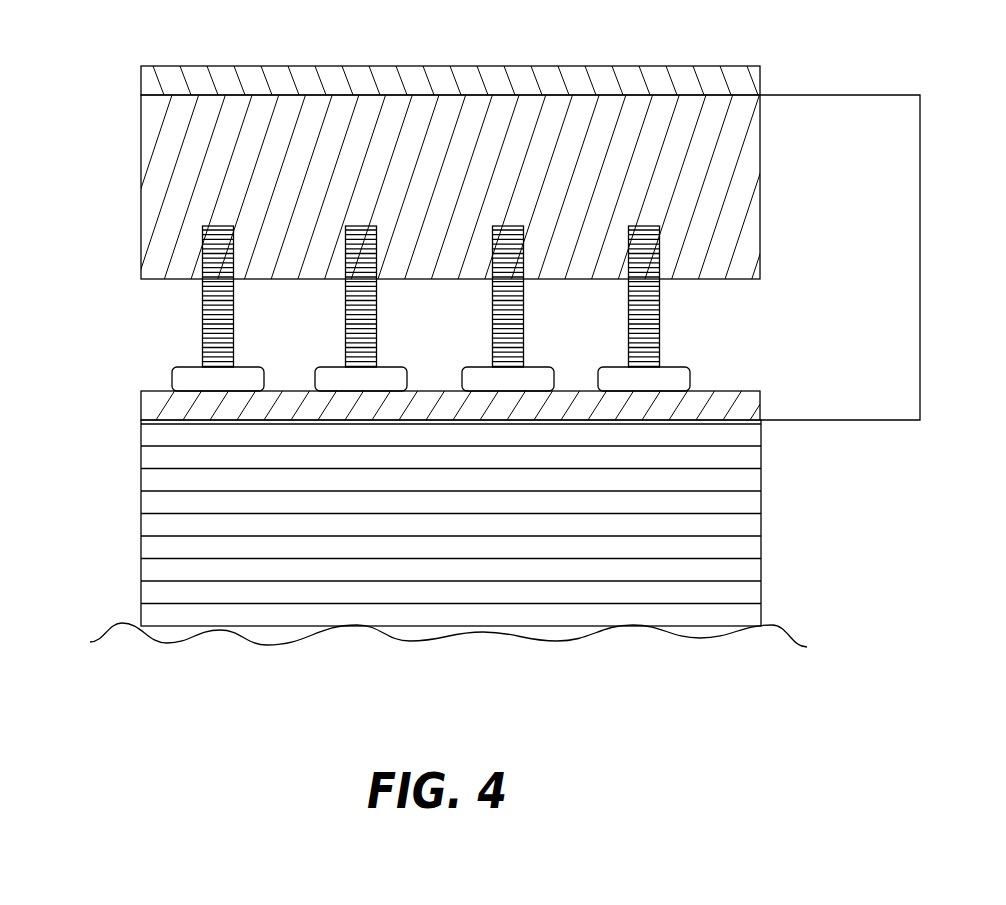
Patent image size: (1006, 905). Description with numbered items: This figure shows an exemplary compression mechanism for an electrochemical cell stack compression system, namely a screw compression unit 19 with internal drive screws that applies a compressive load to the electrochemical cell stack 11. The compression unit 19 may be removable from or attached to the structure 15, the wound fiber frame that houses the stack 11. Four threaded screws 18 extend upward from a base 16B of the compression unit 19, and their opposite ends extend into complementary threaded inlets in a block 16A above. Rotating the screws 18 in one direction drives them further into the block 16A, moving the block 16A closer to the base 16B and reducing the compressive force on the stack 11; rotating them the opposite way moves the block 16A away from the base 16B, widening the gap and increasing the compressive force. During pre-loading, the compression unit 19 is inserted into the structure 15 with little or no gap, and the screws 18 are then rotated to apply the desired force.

The electrochemical cell stack 11 is at (761, 490).
The structure 15 is at (760, 66).
The block 16A is at (760, 195).
The base 16B is at (760, 397).
The threaded screws 18 is at (660, 330).
The screw compression unit 19 is at (920, 265).